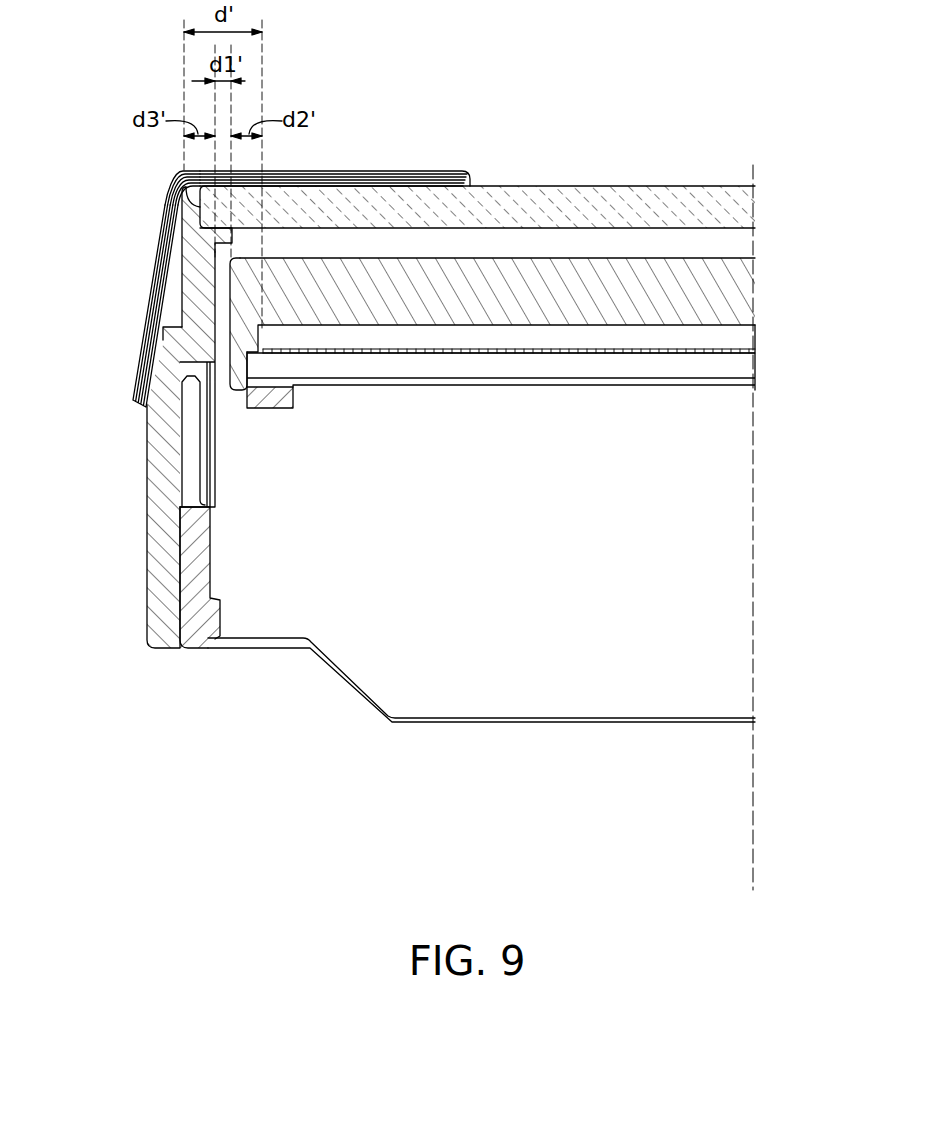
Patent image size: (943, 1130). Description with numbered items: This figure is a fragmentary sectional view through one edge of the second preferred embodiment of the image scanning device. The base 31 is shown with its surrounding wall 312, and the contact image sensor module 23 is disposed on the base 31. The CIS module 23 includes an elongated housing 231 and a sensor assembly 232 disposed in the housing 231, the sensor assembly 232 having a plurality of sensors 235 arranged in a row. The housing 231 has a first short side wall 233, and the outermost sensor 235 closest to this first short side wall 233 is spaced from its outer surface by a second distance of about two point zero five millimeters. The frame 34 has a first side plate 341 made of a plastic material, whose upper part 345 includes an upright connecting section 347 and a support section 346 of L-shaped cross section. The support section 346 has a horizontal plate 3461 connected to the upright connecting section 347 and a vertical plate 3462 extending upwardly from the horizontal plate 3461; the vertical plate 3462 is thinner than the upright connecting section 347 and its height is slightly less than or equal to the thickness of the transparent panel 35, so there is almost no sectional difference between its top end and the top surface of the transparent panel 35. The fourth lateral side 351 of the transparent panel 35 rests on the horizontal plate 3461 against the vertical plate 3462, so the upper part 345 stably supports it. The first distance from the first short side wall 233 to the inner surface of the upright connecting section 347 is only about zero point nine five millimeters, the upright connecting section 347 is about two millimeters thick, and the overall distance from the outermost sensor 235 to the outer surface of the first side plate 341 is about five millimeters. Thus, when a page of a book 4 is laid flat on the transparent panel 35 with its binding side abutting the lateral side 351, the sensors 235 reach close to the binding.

The book 4 is at (405, 167).
The contact image sensor (CIS) module 23 is at (447, 384).
The base 31 is at (303, 675).
The frame 34 is at (151, 397).
The transparent panel 35 is at (705, 207).
The housing 231 is at (730, 322).
The sensor assembly 232 is at (725, 341).
The first short side wall 233 is at (245, 318).
The sensor 235 is at (270, 349).
The surrounding wall 312 is at (195, 548).
The first side plate 341 is at (160, 378).
The upper part 345 is at (181, 287).
The support section 346 is at (195, 232).
The upright connecting section 347 is at (190, 315).
The fourth lateral side 351 is at (185, 178).
The horizontal plate 3461 is at (222, 246).
The vertical plate 3462 is at (190, 207).